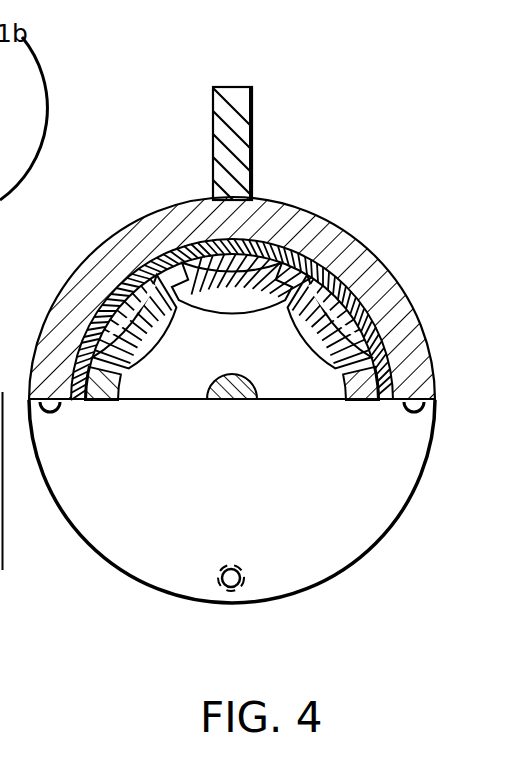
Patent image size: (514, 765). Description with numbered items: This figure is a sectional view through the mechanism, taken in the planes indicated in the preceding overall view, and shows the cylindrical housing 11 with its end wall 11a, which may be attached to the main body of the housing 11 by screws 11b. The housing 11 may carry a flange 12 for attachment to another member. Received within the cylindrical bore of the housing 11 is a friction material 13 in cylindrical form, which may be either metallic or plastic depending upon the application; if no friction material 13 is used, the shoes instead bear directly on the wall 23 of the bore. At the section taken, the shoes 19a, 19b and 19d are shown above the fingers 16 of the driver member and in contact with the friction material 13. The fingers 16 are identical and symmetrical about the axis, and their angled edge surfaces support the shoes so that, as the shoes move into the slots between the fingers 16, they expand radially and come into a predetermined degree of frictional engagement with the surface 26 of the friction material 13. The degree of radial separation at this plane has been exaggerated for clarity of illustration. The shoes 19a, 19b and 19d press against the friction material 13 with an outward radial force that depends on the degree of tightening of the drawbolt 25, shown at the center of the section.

The housing 11 is at (424, 360).
The end wall 11a is at (398, 478).
The screws 11b is at (430, 416).
The flange 12 is at (230, 84).
The friction material 13 is at (320, 282).
The fingers 16 is at (352, 330).
The shoe 19a is at (278, 248).
The shoe 19b is at (108, 397).
The shoe 19d is at (386, 376).
The wall of the bore 23 is at (296, 254).
The drawbolt 25 is at (256, 382).
The surface of the friction material 26 is at (342, 298).